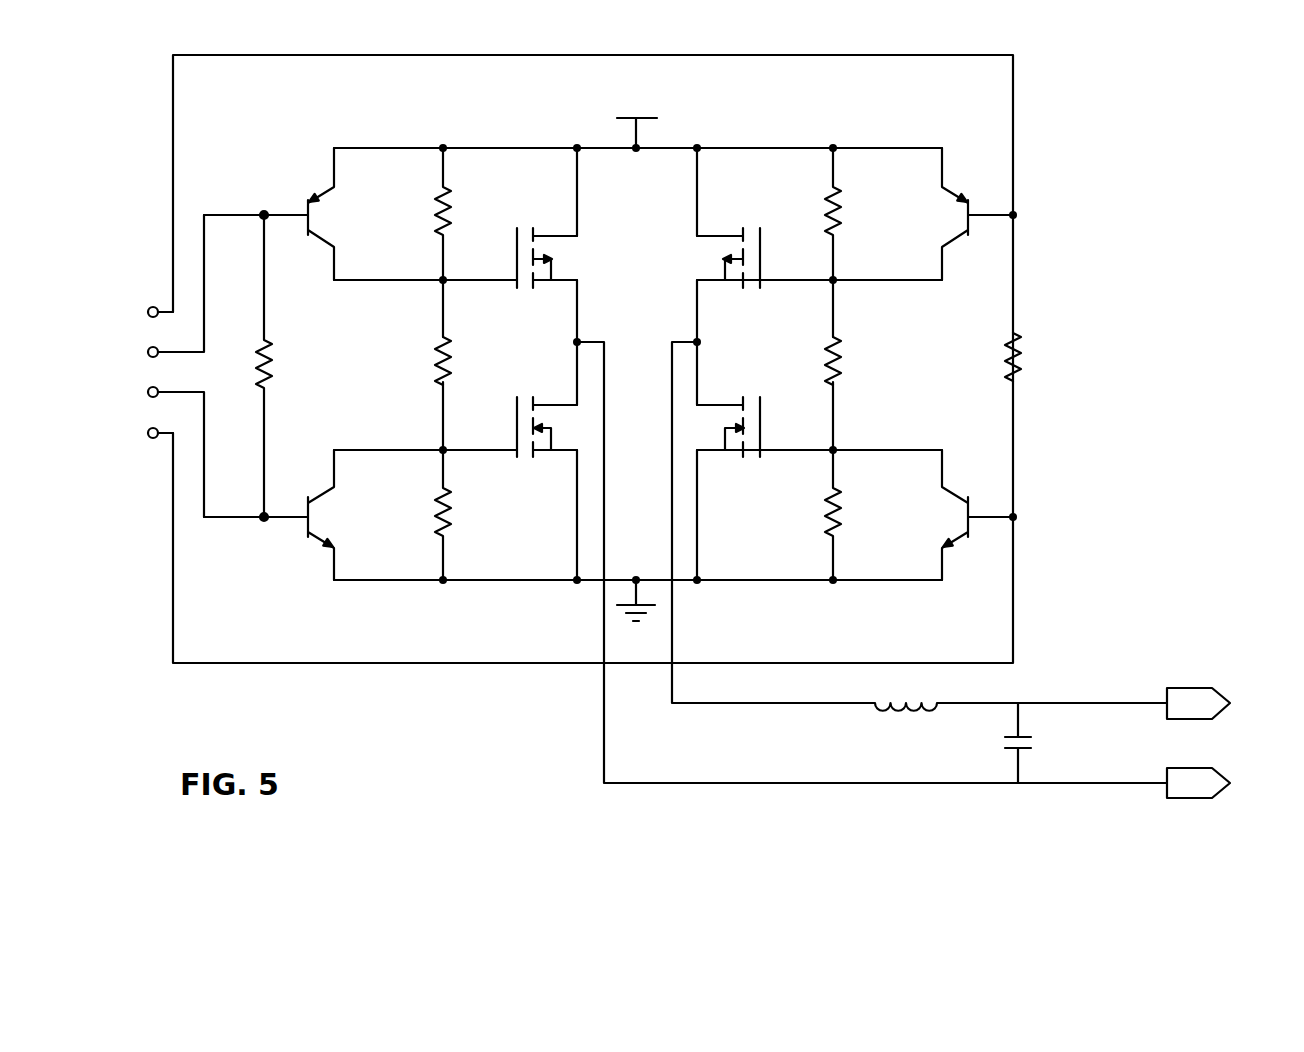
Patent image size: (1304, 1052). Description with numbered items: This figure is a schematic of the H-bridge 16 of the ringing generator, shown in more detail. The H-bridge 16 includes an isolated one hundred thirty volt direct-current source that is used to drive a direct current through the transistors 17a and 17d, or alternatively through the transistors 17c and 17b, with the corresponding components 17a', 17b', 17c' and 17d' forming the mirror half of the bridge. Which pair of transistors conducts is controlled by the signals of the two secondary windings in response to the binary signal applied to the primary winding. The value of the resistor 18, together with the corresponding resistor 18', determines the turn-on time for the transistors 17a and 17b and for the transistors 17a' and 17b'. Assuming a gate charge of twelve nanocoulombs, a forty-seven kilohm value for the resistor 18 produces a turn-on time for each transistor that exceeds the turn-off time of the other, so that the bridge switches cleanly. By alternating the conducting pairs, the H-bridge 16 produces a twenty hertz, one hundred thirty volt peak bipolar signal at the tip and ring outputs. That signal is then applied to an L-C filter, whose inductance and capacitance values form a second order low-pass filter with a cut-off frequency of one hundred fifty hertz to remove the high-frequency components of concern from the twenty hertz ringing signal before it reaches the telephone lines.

The H-bridge 16 is at (1152, 124).
The transistor 17a is at (351, 214).
The transistor 17b is at (352, 515).
The transistor 17c is at (455, 237).
The transistor 17d is at (455, 404).
The transistor 17a' is at (947, 214).
The transistor 17b' is at (949, 515).
The transistor 17c' is at (819, 236).
The transistor 17d' is at (819, 403).
The resistor 18 is at (412, 360).
The resistor 18' is at (868, 360).